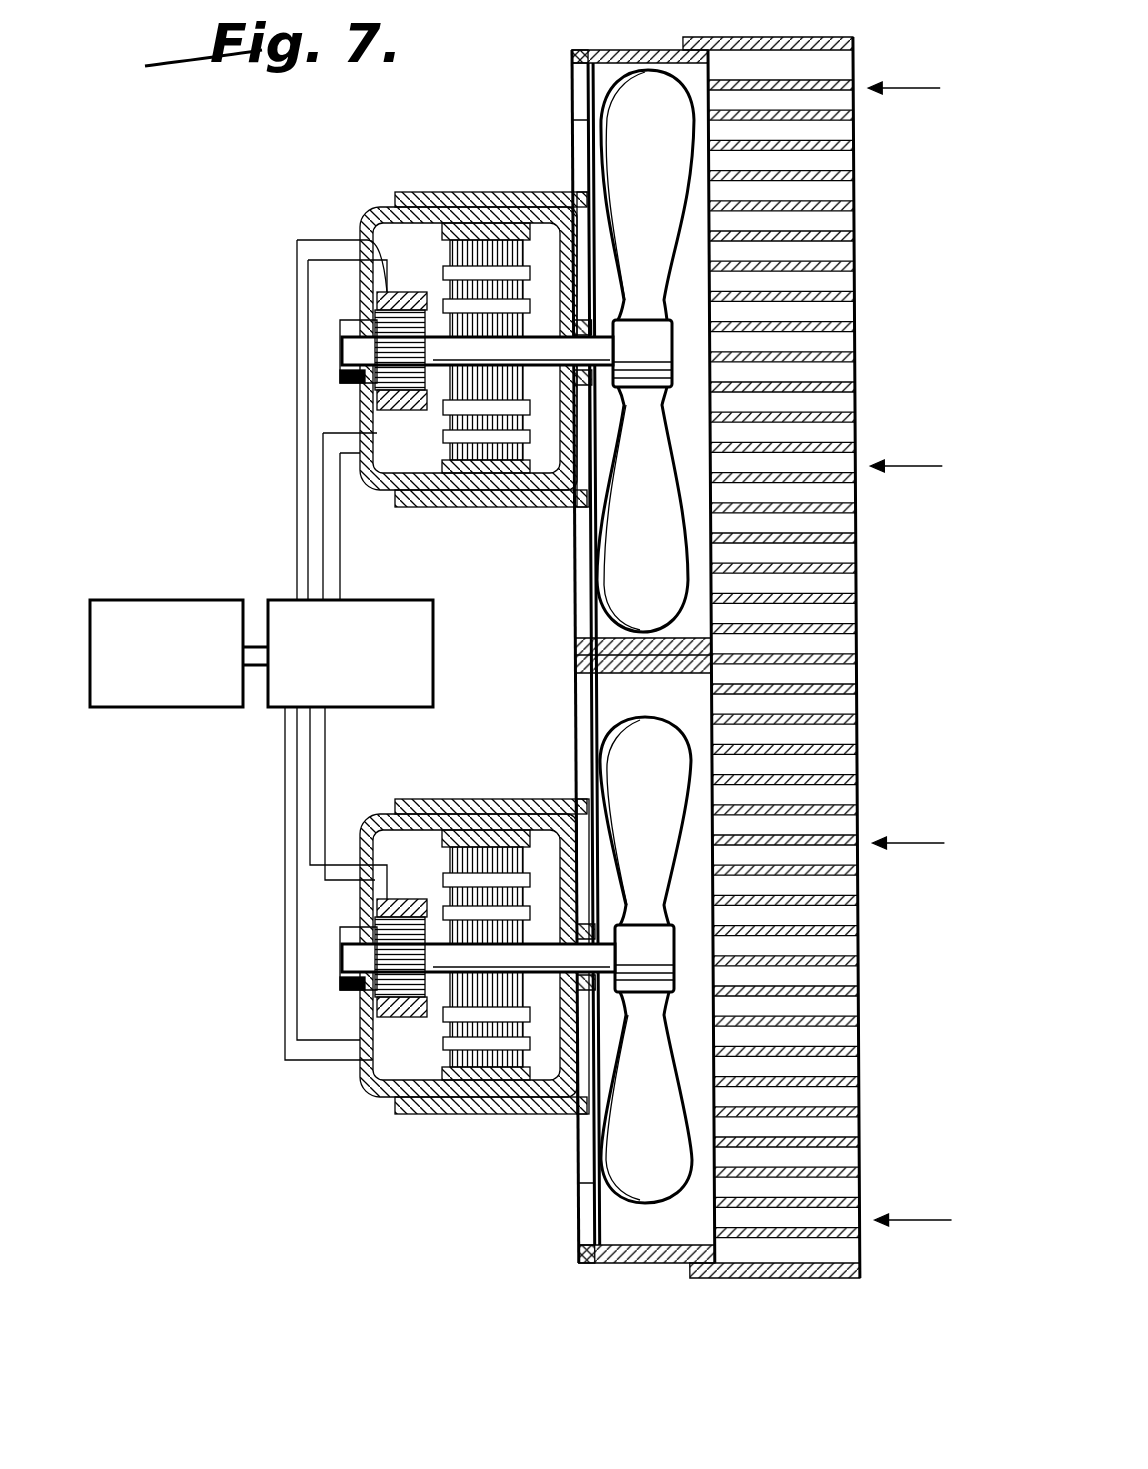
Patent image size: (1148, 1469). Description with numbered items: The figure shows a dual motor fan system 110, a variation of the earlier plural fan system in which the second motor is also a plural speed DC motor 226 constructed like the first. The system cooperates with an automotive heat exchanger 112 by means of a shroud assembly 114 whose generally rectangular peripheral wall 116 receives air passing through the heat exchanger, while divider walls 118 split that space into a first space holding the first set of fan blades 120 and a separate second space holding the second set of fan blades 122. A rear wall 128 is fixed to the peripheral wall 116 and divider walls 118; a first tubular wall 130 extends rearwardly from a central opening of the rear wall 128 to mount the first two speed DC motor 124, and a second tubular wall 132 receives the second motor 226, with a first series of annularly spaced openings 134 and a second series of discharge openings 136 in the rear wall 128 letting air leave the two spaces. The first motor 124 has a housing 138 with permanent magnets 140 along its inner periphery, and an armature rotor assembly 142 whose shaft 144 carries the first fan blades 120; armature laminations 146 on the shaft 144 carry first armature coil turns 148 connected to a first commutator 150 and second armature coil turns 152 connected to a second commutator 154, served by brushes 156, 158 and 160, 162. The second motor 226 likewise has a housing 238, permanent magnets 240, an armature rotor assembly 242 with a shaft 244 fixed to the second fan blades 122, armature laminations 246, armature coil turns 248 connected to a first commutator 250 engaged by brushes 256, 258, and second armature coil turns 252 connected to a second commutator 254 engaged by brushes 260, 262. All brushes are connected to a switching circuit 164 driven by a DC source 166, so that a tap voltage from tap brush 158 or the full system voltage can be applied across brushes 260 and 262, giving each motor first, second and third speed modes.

The dual motor fan system 110 is at (762, 30).
The heat exchanger 112 is at (855, 200).
The shroud assembly 114 is at (560, 54).
The peripheral wall 116 is at (646, 50).
The divider walls 118 is at (615, 640).
The first set of fan blades 120 is at (625, 740).
The second set of fan blades 122 is at (600, 580).
The first two speed DC motor 124 is at (355, 1108).
The rear wall 128 is at (575, 70).
The first tubular wall 130 is at (525, 800).
The second tubular wall 132 is at (475, 192).
The first series of annularly spaced openings 134 is at (585, 676).
The second series of annularly spaced discharge openings 136 is at (580, 190).
The housing 138 is at (410, 1117).
The permanent magnets 140 is at (440, 800).
The armature rotor assembly 142 is at (355, 1001).
The shaft 144 is at (600, 955).
The armature laminations 146 is at (580, 1020).
The first armature coil turns 148 is at (590, 862).
The first commutator 150 is at (377, 940).
The second armature coil turns 152 is at (598, 832).
The second commutator 154 is at (375, 960).
The brush 156 is at (397, 815).
The tap brush 158 is at (380, 1062).
The tap brush 160 is at (375, 905).
The brush 162 is at (375, 1030).
The switching circuit 164 is at (366, 605).
The DC source 166 is at (205, 600).
The second plural speed DC motor 226 is at (362, 480).
The housing 238 is at (420, 507).
The permanent magnets 240 is at (503, 472).
The armature rotor assembly 242 is at (340, 380).
The shaft 244 is at (585, 350).
The armature laminations 246 is at (578, 420).
The first armature coil turns 248 is at (598, 248).
The first commutator 250 is at (375, 322).
The second armature coil turns 252 is at (606, 215).
The second commutator 254 is at (375, 350).
The brush 256 is at (297, 240).
The brush 258 is at (375, 430).
The brush 260 is at (308, 262).
The brush 262 is at (377, 405).